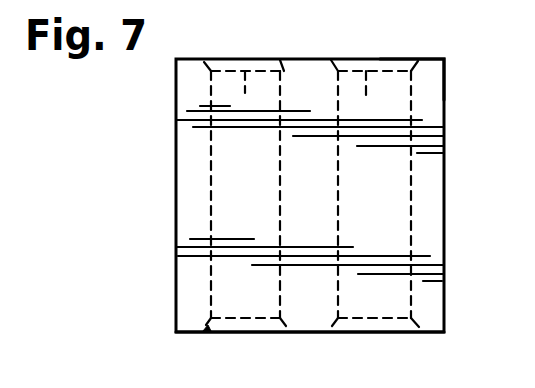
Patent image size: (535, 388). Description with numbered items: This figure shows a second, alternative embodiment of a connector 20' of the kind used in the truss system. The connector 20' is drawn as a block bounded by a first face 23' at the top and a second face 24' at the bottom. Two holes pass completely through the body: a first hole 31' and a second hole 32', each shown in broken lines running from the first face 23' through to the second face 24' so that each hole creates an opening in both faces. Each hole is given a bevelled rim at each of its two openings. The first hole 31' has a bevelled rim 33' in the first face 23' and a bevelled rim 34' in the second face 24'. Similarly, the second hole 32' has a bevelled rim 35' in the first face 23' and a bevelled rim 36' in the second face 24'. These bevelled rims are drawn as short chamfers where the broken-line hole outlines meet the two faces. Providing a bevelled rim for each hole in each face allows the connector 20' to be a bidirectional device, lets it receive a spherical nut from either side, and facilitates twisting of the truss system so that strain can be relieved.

The connector 20' is at (344, 195).
The first face 23' is at (434, 60).
The second face 24' is at (329, 357).
The first hole 31' is at (386, 59).
The second hole 32' is at (271, 56).
The bevelled rim 33' is at (459, 82).
The bevelled rim 34' is at (382, 350).
The bevelled rim 35' is at (166, 86).
The bevelled rim 36' is at (230, 350).